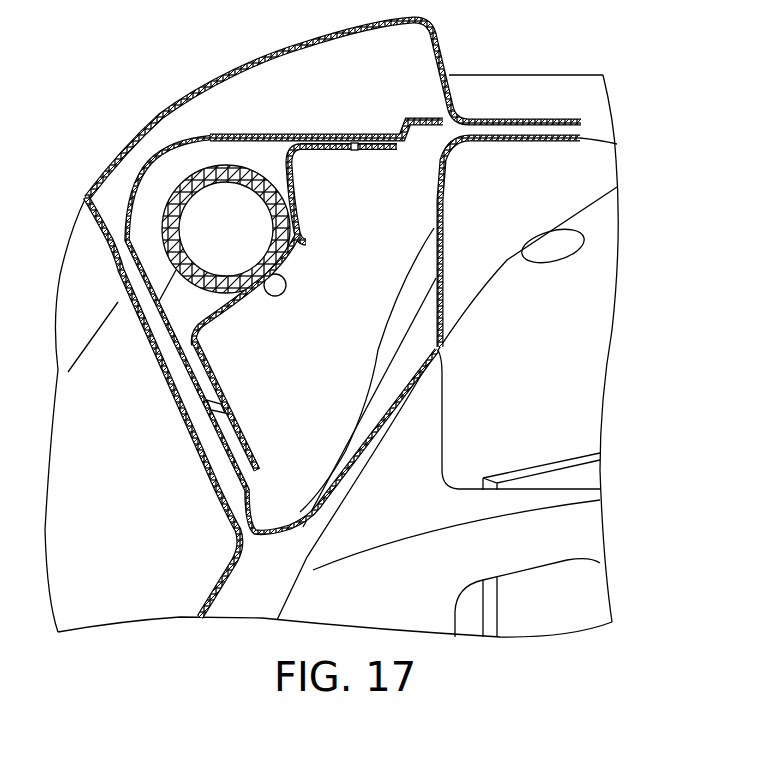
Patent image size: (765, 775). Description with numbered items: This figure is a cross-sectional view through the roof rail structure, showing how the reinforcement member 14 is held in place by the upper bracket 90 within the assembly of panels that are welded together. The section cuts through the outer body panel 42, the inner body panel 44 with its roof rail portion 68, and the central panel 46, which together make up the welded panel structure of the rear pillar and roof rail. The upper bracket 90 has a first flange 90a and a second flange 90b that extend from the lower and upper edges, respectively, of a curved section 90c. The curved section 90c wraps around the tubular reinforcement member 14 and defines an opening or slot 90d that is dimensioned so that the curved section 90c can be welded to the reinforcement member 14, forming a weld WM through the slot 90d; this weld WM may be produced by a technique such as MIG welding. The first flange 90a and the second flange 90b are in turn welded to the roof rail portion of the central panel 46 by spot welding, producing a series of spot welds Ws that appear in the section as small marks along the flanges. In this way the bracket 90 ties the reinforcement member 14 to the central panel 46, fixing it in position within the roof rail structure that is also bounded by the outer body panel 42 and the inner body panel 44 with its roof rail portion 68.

The reinforcement member 14 is at (249, 177).
The outer body panel 42 is at (177, 106).
The inner body panel 44 is at (519, 313).
The roof rail portion 68 is at (445, 290).
The central panel 46 is at (315, 140).
The upper bracket 90 is at (285, 327).
The first flange 90a is at (252, 457).
The second flange 90b is at (325, 152).
The curved section 90c is at (218, 350).
The slot 90d is at (295, 228).
The spot welds WS is at (220, 406).
The weld WM is at (283, 287).